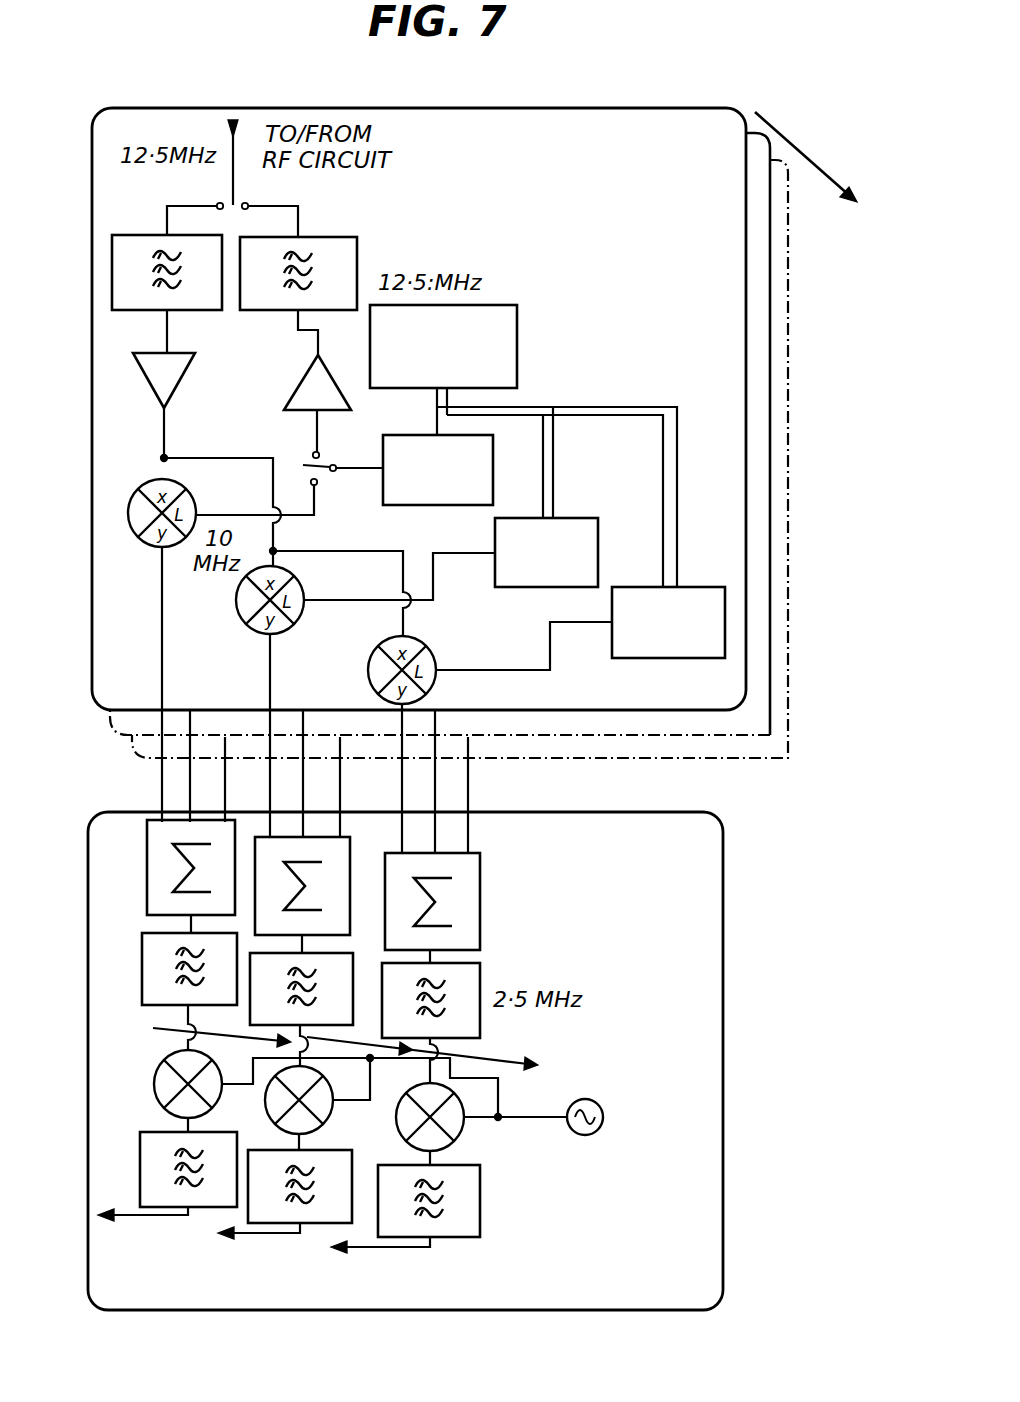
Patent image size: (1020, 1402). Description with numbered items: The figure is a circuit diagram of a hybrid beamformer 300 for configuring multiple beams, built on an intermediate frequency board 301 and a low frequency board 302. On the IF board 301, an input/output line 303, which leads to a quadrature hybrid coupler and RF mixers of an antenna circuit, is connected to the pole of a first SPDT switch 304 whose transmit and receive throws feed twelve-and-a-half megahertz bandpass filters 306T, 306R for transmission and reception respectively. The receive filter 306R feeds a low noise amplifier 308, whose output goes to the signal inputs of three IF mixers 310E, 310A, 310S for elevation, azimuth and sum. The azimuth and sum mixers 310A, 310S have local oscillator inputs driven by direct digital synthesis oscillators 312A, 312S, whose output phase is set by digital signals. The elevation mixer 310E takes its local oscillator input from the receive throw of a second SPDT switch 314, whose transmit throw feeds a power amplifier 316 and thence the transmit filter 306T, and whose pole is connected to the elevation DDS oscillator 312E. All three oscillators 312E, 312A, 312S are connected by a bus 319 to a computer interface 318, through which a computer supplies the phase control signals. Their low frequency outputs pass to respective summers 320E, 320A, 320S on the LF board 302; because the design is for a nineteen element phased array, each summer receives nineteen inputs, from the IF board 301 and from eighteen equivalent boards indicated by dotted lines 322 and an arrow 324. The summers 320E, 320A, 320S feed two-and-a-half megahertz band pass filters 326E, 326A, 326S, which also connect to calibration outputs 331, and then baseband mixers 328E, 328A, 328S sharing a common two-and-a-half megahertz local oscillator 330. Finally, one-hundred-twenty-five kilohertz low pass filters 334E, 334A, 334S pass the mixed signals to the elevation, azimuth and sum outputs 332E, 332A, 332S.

The hybrid beamformer 300 is at (398, 399).
The IF circuit board 301 is at (86, 672).
The LF circuit board 302 is at (84, 885).
The input/output line 303 is at (237, 133).
The first SPDT switch 304 is at (237, 198).
The receive bandpass filter 306R is at (128, 235).
The transmit bandpass filter 306T is at (348, 237).
The low noise amplifier 308 is at (182, 388).
The elevation IF mixer 310E is at (183, 487).
The azimuth IF mixer 310A is at (243, 607).
The sum IF mixer 310S is at (429, 648).
The elevation DDS local oscillator 312E is at (476, 506).
The azimuth DDS local oscillator 312A is at (548, 592).
The sum DDS local oscillator 312S is at (692, 658).
The second SPDT switch 314 is at (306, 464).
The power amplifier 316 is at (299, 388).
The computer interface 318 is at (517, 322).
The bus 319 is at (565, 410).
The elevation summer 320E is at (146, 826).
The azimuth summer 320A is at (356, 840).
The sum summer 320S is at (482, 860).
The other IF boards 322 is at (768, 389).
The arrow 324 is at (845, 198).
The elevation band pass filter 326E is at (142, 950).
The azimuth band pass filter 326A is at (353, 962).
The sum band pass filter 326S is at (470, 977).
The elevation baseband mixer 328E is at (156, 1078).
The azimuth baseband mixer 328A is at (276, 1128).
The sum baseband mixer 328S is at (464, 1128).
The 2.5 MHz local oscillator 330 is at (587, 1135).
The calibration outputs 331 is at (500, 1043).
The elevation output 332E is at (123, 1213).
The azimuth output 332A is at (217, 1240).
The sum output 332S is at (343, 1250).
The elevation low pass filter 334E is at (158, 1133).
The azimuth low pass filter 334A is at (357, 1147).
The sum low pass filter 334S is at (482, 1172).